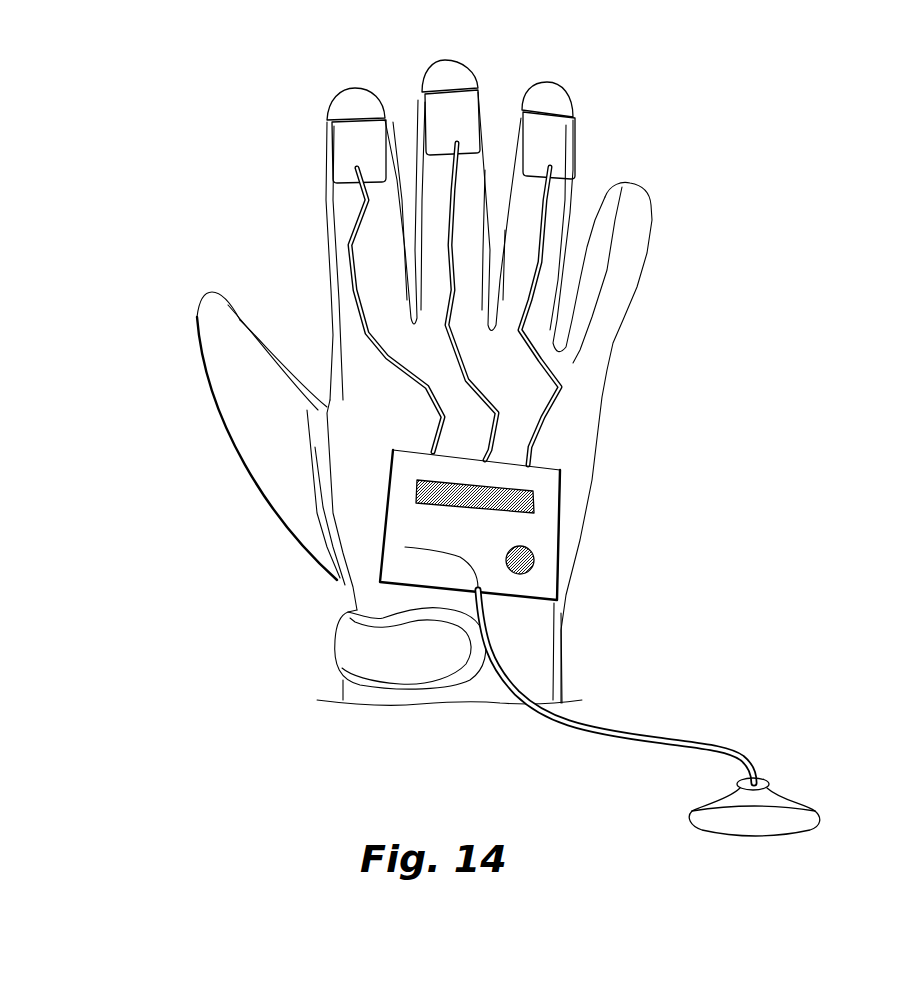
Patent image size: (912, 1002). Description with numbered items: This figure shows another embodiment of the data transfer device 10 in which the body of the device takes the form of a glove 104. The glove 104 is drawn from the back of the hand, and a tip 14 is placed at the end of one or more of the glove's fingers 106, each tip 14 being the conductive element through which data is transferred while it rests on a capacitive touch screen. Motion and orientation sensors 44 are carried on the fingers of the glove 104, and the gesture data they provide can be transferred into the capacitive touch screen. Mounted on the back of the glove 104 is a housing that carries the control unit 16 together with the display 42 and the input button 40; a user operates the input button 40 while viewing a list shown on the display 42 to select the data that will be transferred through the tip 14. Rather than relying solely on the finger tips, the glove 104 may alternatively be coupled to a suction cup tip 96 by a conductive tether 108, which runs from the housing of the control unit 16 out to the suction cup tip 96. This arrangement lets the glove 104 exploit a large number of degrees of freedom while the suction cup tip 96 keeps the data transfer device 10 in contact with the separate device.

The data transfer device 10 is at (118, 94).
The tip 14 is at (345, 95).
The motion and orientation sensors 44 is at (345, 130).
The glove's fingers 106 is at (217, 327).
The glove 104 is at (568, 423).
The control unit 16 is at (542, 527).
The display 42 is at (535, 495).
The input button 40 is at (534, 562).
The conductive tether 108 is at (645, 730).
The suction cup tip 96 is at (790, 793).